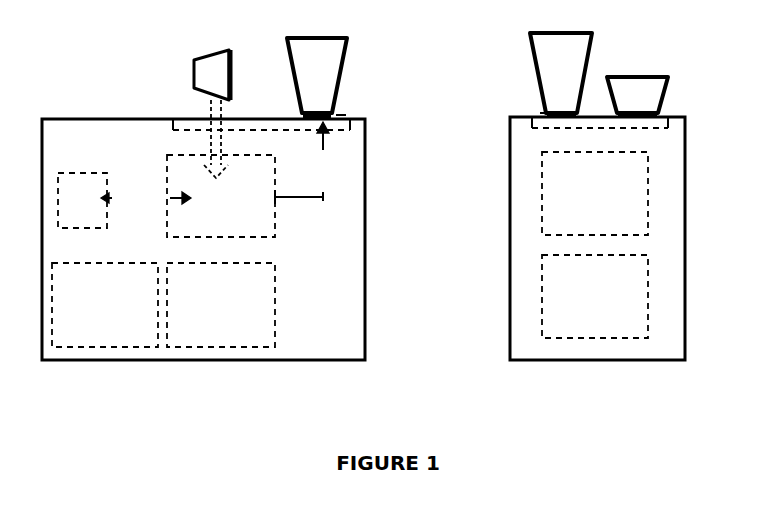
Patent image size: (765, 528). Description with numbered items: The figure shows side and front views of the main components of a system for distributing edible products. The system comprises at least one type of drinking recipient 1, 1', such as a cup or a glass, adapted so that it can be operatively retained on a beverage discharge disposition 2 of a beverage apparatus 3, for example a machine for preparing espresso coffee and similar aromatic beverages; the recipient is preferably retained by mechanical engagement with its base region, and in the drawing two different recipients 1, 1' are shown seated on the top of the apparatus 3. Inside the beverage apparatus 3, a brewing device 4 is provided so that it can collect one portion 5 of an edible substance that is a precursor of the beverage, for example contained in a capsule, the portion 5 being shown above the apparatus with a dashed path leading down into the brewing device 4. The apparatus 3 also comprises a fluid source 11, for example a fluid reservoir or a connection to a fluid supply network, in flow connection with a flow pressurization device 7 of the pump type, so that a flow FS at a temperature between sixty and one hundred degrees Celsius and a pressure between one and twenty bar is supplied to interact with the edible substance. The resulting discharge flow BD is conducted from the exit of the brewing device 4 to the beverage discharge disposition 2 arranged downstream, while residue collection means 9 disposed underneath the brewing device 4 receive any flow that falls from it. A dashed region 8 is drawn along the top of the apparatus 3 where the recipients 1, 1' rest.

The drinking recipient 1 is at (439, 62).
The drinking recipient 1' is at (637, 84).
The beverage discharge disposition 2 is at (337, 118).
The beverage apparatus 3 is at (363, 216).
The brewing device 4 is at (407, 194).
The portion of edible substance 5 is at (212, 99).
The flow pressurization device 7 is at (82, 189).
The interface region 8 is at (420, 110).
The residue collection means 9 is at (407, 301).
The fluid source 11 is at (105, 305).
The discharge flow BD is at (310, 163).
The flow FS is at (146, 200).